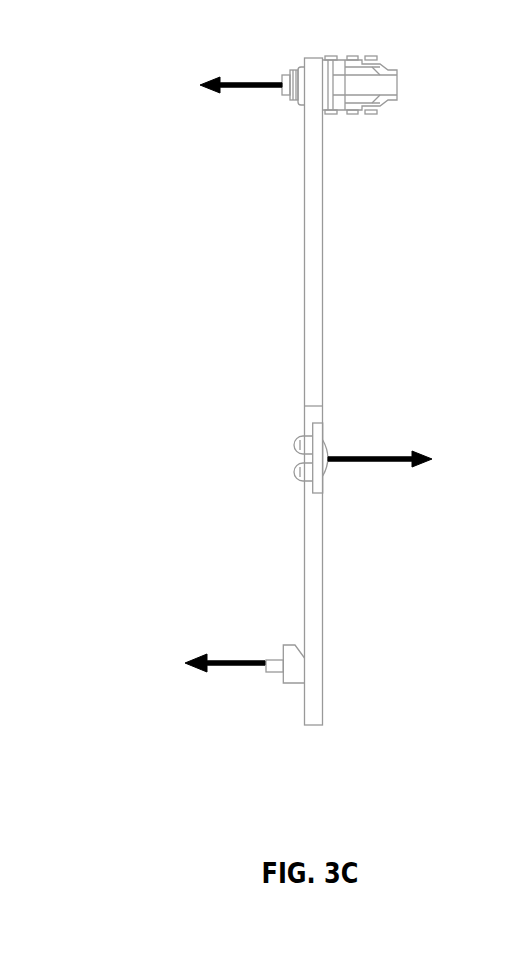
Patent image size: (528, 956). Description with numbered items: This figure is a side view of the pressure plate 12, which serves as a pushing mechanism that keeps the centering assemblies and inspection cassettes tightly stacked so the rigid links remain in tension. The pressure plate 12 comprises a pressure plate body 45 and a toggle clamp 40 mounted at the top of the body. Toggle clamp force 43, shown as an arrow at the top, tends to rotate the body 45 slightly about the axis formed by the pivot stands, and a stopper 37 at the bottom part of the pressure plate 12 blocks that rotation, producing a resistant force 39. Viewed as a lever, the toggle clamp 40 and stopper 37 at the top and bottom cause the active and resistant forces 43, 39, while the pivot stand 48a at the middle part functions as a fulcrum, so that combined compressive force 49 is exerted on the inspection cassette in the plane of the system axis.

The pressure plate 12 is at (179, 225).
The stopper 37 is at (278, 662).
The resistant force 39 is at (220, 665).
The toggle clamp 40 is at (405, 86).
The toggle clamp force 43 is at (241, 82).
The pressure plate body 45 is at (317, 275).
The pivot stand 48a is at (320, 470).
The combined force 49 is at (368, 456).